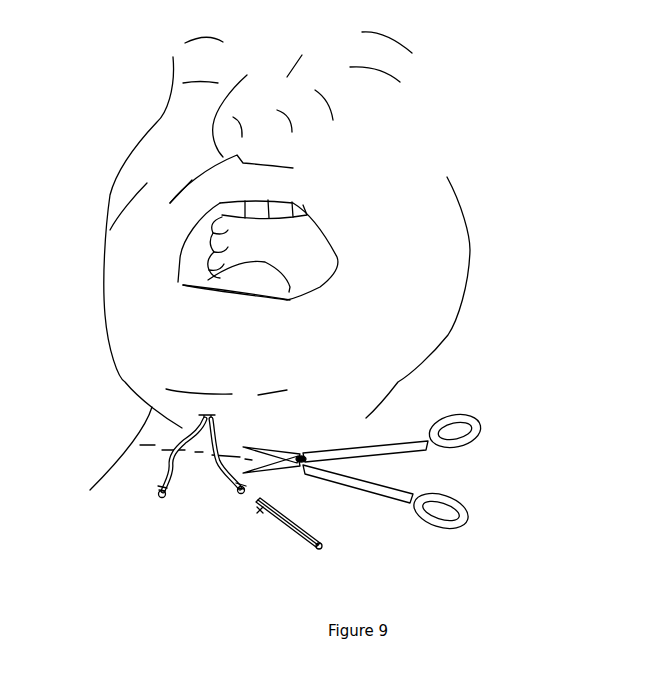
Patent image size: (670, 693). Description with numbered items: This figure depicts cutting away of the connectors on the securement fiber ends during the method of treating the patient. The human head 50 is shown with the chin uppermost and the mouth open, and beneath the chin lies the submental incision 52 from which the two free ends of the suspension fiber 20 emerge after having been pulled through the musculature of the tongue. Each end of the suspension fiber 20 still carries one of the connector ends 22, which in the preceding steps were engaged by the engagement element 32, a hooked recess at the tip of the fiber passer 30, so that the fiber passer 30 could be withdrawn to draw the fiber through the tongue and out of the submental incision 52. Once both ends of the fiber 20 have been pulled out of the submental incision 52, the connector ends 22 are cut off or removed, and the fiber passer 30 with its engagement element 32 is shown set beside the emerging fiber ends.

The human head 50 is at (518, 202).
The submental incision 52 is at (224, 417).
The suspension fiber 20 is at (191, 430).
The connector ends 22 is at (147, 488).
The fiber passer 30 is at (321, 534).
The engagement element 32 is at (291, 513).